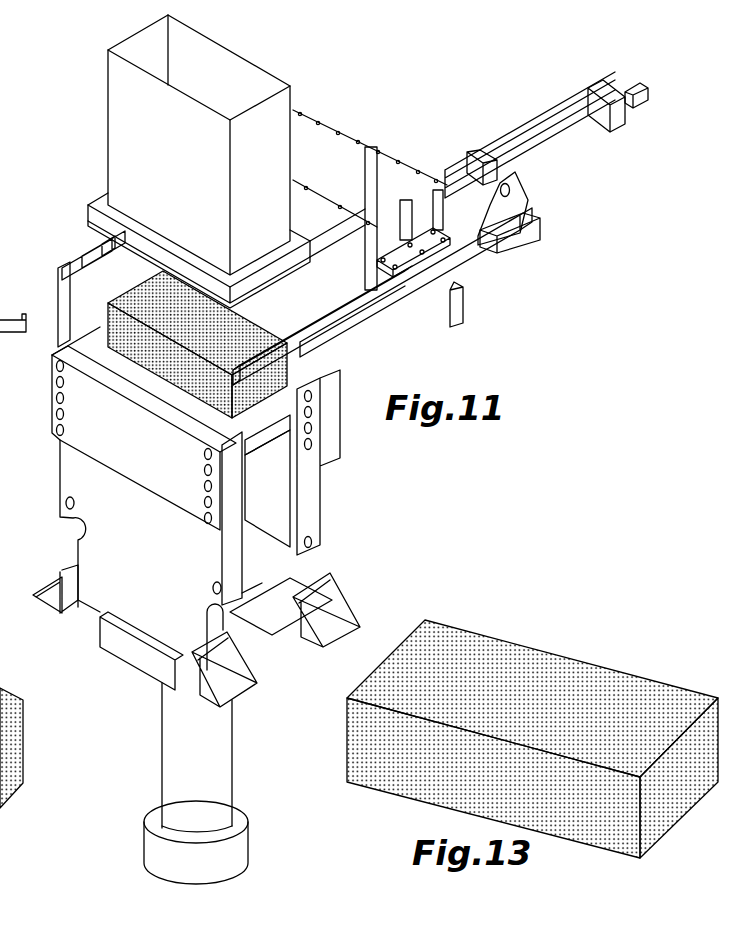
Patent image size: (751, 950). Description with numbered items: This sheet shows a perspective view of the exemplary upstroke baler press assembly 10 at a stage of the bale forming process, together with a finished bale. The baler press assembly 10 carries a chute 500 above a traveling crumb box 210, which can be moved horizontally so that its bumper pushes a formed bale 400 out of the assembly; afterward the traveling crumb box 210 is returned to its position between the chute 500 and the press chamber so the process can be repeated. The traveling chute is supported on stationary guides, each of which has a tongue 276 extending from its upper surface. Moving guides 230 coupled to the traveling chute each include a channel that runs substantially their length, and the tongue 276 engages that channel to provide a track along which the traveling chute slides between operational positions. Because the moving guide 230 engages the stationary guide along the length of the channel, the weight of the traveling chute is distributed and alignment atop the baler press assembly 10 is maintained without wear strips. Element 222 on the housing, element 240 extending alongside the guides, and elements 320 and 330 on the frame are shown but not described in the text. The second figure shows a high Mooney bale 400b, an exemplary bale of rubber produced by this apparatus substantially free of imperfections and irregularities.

In FIG. 11, the baler press assembly 10 is at (379, 80).
In FIG. 11, the chute 500 is at (113, 117).
In FIG. 11, the traveling crumb box 210 is at (337, 227).
In FIG. 11, the upper housing plate 222 is at (362, 172).
In FIG. 11, the bale 400 is at (216, 336).
In FIG. 11, the tongue 276 is at (337, 307).
In FIG. 11, the moving guide 230 is at (462, 303).
In FIG. 11, the pneumatic cylinder 240 is at (556, 127).
In FIG. 11, the side plate 330 is at (262, 420).
In FIG. 11, the mounting plate 320 is at (258, 445).
In FIG. 13, the high Mooney bale 400b is at (582, 660).